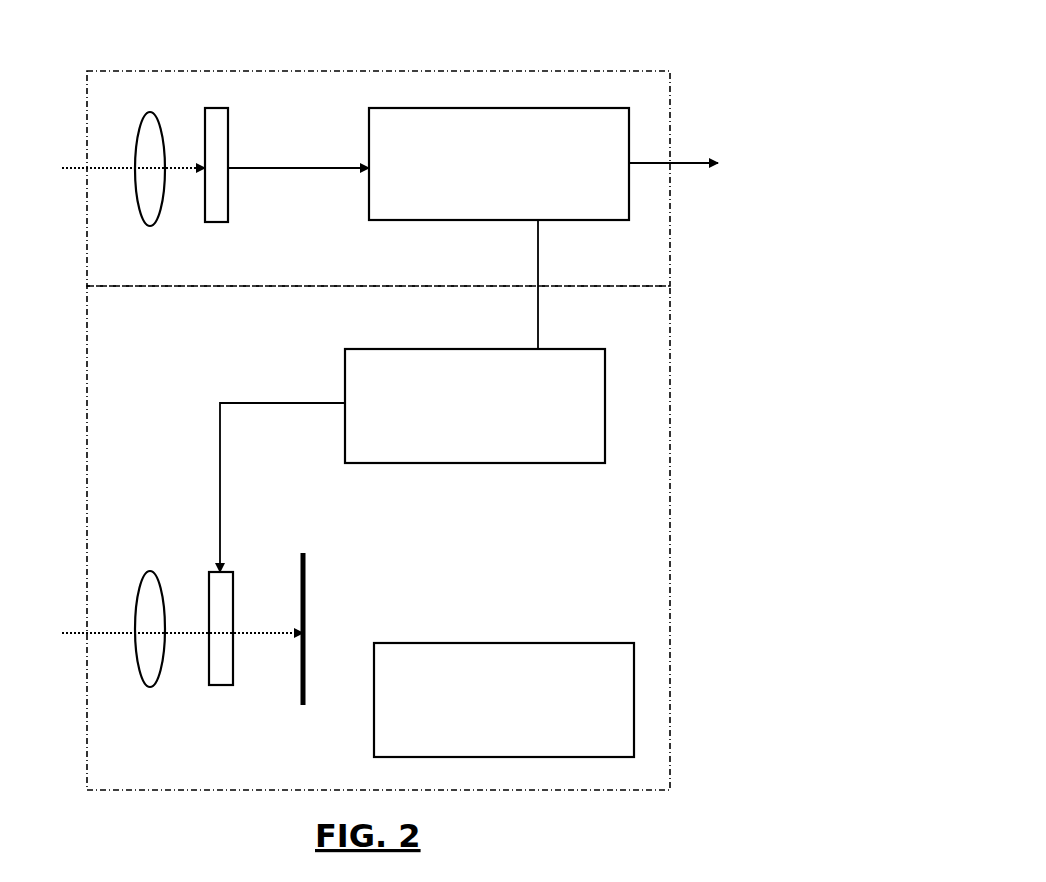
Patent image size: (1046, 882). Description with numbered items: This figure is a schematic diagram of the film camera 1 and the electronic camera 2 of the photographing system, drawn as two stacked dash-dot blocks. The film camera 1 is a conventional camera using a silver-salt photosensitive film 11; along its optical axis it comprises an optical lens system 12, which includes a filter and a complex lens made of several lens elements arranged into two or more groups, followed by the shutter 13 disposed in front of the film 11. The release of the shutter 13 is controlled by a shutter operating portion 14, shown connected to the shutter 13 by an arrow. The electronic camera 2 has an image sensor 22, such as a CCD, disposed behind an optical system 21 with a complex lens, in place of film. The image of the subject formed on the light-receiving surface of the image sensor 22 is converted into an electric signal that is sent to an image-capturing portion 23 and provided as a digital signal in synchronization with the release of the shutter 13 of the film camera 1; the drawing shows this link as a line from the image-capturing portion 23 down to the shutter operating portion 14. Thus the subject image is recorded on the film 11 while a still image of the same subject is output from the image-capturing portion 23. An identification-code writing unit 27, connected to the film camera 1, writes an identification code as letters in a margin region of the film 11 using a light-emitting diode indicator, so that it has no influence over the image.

The film camera 1 is at (670, 422).
The electronic camera 2 is at (670, 117).
The film 11 is at (306, 602).
The optical lens system 12 is at (135, 623).
The shutter 13 is at (208, 577).
The shutter operating portion 14 is at (605, 378).
The optical system 21 is at (150, 110).
The image sensor 22 is at (208, 108).
The image-capturing portion 23 is at (467, 108).
The identification-code writing unit 27 is at (634, 702).